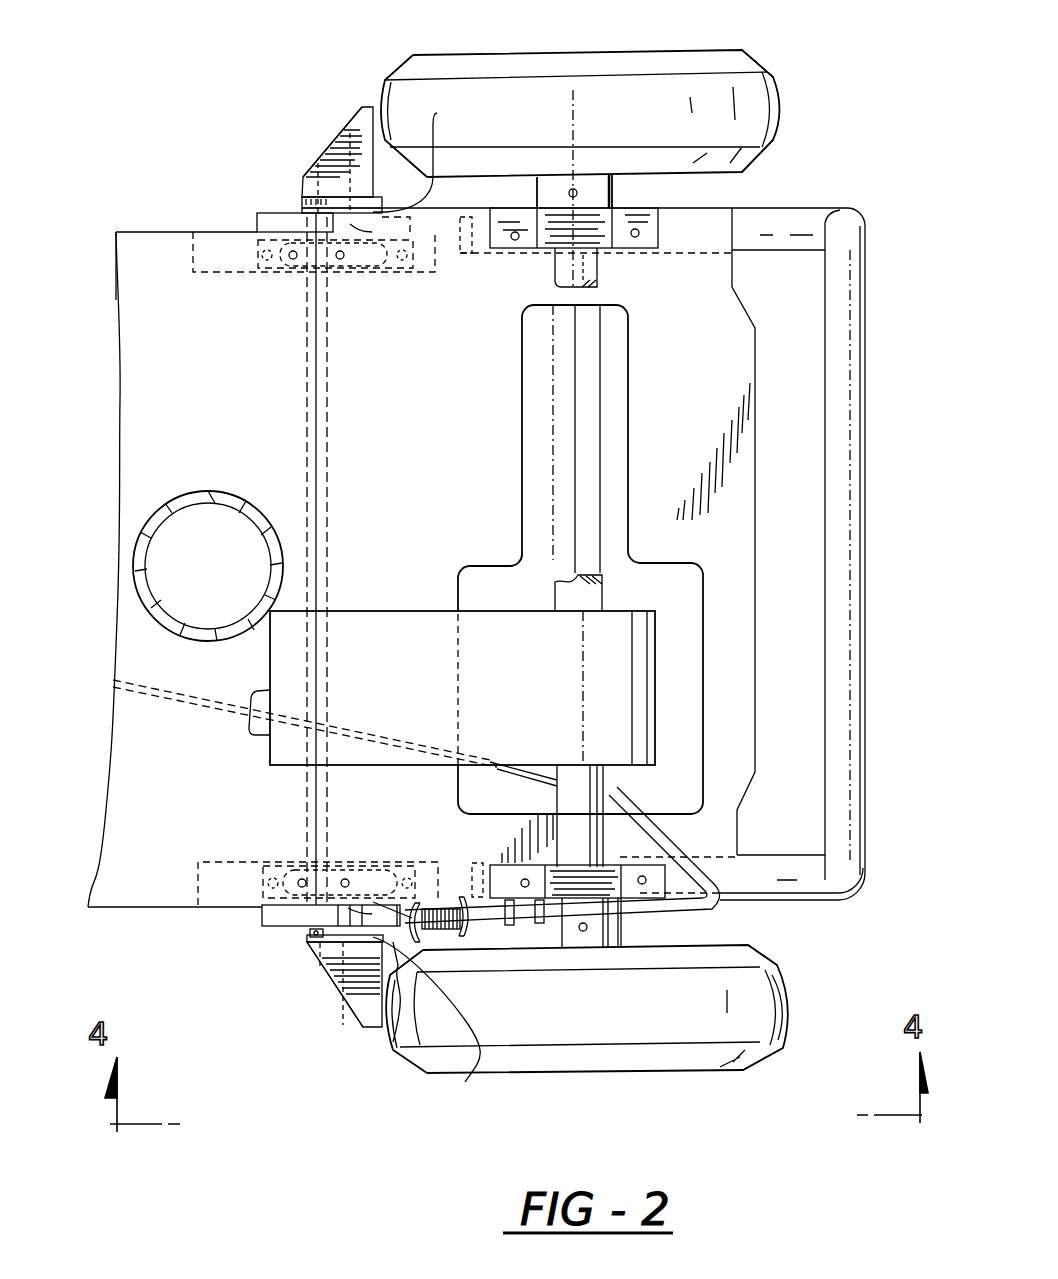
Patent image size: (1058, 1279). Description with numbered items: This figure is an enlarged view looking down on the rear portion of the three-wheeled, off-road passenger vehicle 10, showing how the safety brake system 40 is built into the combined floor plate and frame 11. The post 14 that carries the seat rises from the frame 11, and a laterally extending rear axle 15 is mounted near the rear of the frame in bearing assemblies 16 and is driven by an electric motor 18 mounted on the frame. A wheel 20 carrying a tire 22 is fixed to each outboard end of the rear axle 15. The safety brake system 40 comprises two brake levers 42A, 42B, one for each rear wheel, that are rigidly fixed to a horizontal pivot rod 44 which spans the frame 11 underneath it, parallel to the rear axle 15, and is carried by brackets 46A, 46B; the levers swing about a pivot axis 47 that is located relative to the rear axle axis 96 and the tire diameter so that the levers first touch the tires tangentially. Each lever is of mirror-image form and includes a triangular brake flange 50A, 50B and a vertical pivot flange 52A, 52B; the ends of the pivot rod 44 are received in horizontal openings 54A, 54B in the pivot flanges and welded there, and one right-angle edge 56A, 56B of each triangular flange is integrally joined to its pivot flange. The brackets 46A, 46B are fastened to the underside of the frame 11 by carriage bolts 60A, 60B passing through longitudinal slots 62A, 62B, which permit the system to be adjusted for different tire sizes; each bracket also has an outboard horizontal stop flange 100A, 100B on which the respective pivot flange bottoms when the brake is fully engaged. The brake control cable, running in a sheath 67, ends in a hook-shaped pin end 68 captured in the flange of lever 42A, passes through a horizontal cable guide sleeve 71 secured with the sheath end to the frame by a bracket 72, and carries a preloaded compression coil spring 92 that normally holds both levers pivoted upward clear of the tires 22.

The three-wheeled, off-road passenger vehicle 10 is at (118, 264).
The combined floor plate and frame 11 is at (165, 243).
The post 14 is at (170, 491).
The rear axle 15 is at (607, 793).
The bearing assemblies 16 is at (637, 248).
The electric motor 18 is at (422, 611).
The wheel 20 is at (620, 193).
The tire 22 is at (783, 103).
The safety brake system 40 is at (309, 939).
The brake lever 42A is at (334, 987).
The brake lever 42B is at (333, 143).
The pivot rod 44 is at (328, 540).
The bracket 46A is at (264, 909).
The bracket 46B is at (258, 215).
The pivot axis 47 is at (316, 397).
The brake flange 50A is at (363, 1028).
The brake flange 50B is at (343, 137).
The vertical pivot flange 52A is at (343, 1025).
The vertical pivot flange 52B is at (400, 120).
The horizontal opening 54A is at (317, 965).
The horizontal opening 54B is at (313, 163).
The right angle side 56A is at (348, 908).
The right angle side 56B is at (350, 224).
The carriage bolts 60A is at (345, 880).
The carriage bolts 60B is at (341, 259).
The longitudinal slot 62A is at (408, 879).
The longitudinal slot 62B is at (375, 265).
The sheath 67 is at (675, 847).
The hook shaped pin end 68 is at (429, 1021).
The cable guide sleeve 71 is at (486, 920).
The bracket 72 is at (522, 920).
The compression coil spring 92 is at (437, 907).
The rear axle axis 96 is at (575, 412).
The stop flange 100A is at (393, 1042).
The stop flange 100B is at (437, 113).